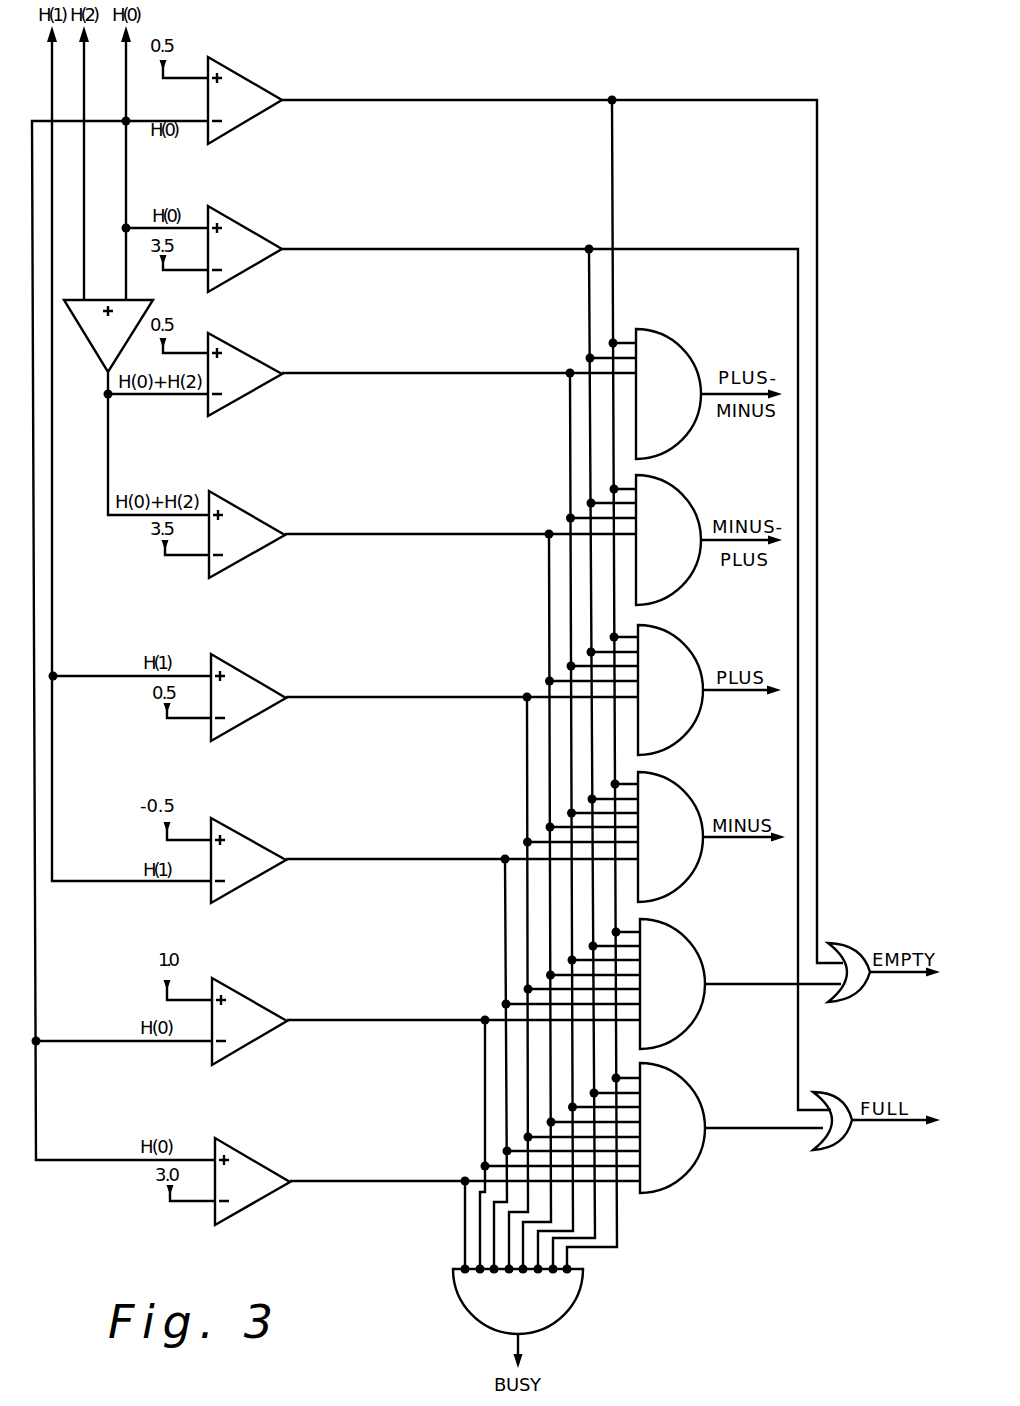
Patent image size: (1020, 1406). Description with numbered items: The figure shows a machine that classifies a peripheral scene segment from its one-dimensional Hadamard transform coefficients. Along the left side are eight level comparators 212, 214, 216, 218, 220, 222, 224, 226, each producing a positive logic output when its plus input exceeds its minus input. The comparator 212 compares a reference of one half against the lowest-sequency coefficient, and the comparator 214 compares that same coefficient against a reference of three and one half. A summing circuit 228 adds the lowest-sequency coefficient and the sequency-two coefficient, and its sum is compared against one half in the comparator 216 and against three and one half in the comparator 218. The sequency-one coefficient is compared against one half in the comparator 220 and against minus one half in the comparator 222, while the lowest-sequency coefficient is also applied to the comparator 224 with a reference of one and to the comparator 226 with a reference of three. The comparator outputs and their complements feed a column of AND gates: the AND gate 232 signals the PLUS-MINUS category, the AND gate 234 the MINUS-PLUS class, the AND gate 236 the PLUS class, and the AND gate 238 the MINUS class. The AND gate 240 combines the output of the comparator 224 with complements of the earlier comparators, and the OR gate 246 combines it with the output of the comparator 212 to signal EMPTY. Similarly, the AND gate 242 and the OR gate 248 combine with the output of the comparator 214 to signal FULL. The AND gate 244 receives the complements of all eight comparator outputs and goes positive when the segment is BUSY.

The level comparator 212 is at (245, 100).
The level comparator 214 is at (245, 249).
The level comparator 216 is at (245, 374).
The level comparator 218 is at (247, 534).
The level comparator 220 is at (248, 697).
The level comparator 222 is at (248, 860).
The level comparator 224 is at (249, 1021).
The level comparator 226 is at (252, 1181).
The summing circuit 228 is at (136, 407).
The AND gate 232 is at (709, 394).
The AND gate 234 is at (709, 540).
The AND gate 236 is at (709, 690).
The AND gate 238 is at (711, 837).
The AND gate 240 is at (740, 984).
The AND gate 242 is at (731, 1128).
The AND gate 244 is at (518, 1317).
The OR gate 246 is at (884, 988).
The OR gate 248 is at (876, 1139).